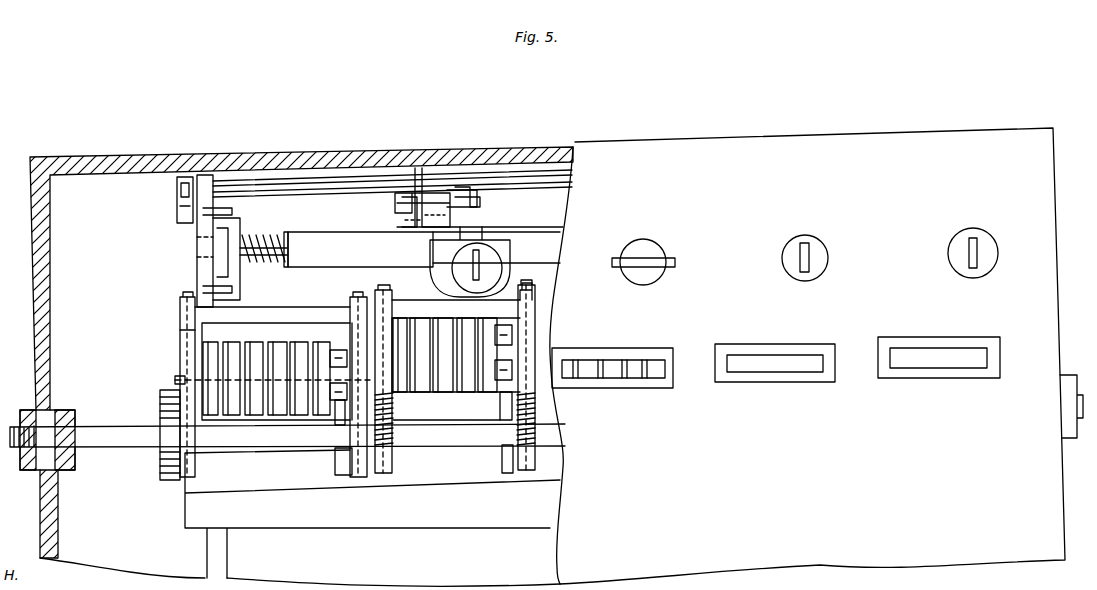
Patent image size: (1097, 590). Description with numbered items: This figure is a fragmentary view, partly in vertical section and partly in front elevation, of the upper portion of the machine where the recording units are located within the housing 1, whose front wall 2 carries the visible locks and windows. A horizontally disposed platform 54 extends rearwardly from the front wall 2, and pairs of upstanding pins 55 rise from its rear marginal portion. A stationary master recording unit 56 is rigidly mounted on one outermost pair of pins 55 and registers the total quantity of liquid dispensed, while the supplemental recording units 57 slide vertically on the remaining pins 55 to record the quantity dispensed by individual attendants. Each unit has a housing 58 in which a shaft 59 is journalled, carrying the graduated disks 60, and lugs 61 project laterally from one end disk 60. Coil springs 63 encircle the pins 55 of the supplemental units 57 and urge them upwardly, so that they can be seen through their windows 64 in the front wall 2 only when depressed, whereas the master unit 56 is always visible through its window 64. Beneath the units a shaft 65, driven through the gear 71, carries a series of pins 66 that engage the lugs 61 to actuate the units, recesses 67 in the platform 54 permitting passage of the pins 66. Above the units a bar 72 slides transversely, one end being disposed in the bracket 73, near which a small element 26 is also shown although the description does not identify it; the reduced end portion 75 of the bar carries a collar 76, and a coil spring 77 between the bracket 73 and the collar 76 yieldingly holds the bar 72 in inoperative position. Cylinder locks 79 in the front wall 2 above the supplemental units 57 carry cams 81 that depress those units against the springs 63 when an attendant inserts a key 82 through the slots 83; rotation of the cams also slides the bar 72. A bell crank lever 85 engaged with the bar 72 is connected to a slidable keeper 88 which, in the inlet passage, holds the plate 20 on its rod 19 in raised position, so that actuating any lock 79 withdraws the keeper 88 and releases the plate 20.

The housing 1 is at (888, 118).
The front wall 2 is at (970, 150).
The rod 19 is at (320, 180).
The plate 20 is at (373, 185).
The stop post 26 is at (178, 207).
The platform 54 is at (325, 520).
The upstanding pins 55 is at (185, 318).
The master recording unit 56 is at (181, 352).
The supplemental recording unit 57 is at (534, 283).
The housing 58 is at (273, 310).
The shaft 59 is at (180, 380).
The graduated disks 60 is at (272, 345).
The lugs 61 is at (333, 350).
The coil springs 63 is at (517, 430).
The window 64 is at (637, 363).
The shaft 65 is at (123, 447).
The pins 66 is at (337, 410).
The recesses 67 is at (338, 462).
The gear 71 is at (167, 480).
The bar 72 is at (523, 238).
The bracket 73 is at (237, 222).
The reduced end portion 75 is at (252, 240).
The collar 76 is at (292, 248).
The coil spring 77 is at (275, 237).
The cylinder locks 79 is at (514, 270).
The cams 81 is at (440, 268).
The key 82 is at (660, 262).
The slots 83 is at (485, 257).
The bell crank lever 85 is at (483, 197).
The keeper 88 is at (463, 192).